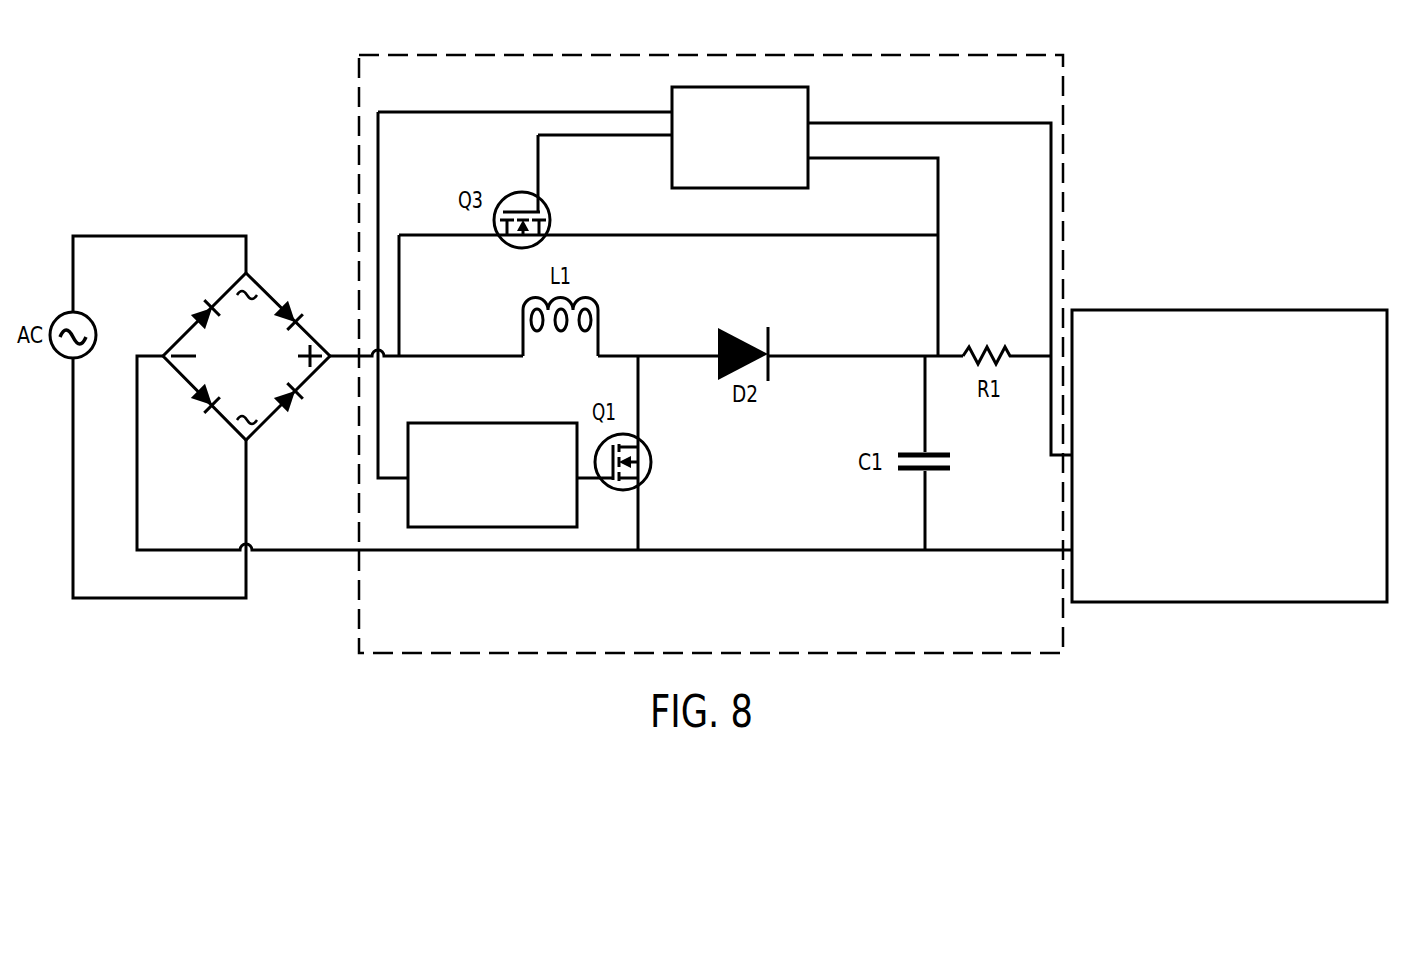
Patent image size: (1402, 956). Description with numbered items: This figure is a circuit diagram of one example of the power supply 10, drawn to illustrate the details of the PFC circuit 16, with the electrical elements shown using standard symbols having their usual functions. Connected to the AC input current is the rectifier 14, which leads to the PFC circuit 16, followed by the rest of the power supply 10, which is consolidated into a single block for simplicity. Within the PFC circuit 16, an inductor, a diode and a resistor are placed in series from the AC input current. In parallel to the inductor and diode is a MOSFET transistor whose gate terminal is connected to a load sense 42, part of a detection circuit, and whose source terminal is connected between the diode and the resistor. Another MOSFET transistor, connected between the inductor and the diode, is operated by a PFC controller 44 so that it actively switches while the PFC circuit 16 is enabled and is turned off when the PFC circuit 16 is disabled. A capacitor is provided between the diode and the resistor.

The power supply 10 is at (1363, 469).
The rectifier 14 is at (170, 315).
The PFC circuit 16 is at (711, 335).
The load sense 42 is at (787, 164).
The PFC controller 44 is at (503, 516).